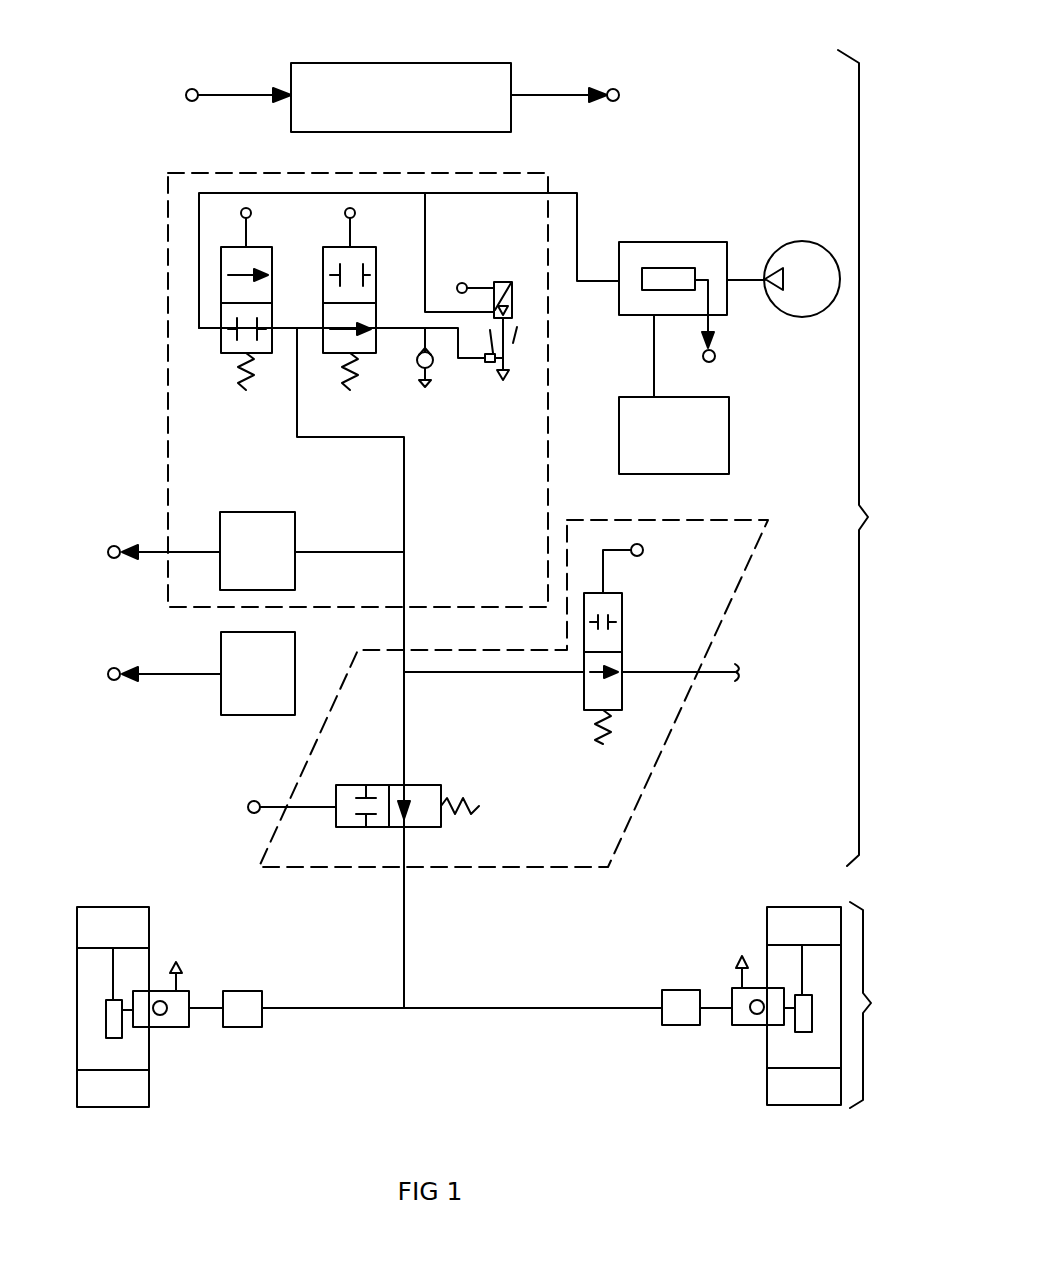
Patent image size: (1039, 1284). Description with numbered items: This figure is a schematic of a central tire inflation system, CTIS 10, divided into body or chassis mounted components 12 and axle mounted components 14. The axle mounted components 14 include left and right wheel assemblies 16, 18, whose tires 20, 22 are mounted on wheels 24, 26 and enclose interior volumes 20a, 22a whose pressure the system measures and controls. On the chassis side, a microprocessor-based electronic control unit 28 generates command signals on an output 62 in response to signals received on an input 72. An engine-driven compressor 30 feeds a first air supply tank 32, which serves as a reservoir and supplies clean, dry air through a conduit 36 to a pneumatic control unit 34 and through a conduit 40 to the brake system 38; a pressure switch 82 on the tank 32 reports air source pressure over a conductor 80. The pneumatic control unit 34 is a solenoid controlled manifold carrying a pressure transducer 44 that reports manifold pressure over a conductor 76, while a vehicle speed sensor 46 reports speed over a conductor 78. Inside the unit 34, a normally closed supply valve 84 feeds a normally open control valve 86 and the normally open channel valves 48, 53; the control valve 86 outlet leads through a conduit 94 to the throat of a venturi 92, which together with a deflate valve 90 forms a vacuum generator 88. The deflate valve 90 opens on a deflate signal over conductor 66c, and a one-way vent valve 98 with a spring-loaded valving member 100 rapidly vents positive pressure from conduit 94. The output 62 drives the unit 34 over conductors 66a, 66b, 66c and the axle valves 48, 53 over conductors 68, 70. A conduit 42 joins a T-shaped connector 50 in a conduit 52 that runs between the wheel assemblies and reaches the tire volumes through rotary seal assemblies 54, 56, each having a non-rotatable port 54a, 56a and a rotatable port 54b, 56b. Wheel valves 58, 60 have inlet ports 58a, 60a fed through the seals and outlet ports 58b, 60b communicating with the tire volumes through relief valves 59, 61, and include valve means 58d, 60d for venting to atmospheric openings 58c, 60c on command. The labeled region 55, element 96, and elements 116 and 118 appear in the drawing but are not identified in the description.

The central tire inflation system 10 is at (676, 140).
The body/chassis mounted components 12 is at (868, 458).
The axle mounted components 14 is at (875, 1005).
The left wheel assembly 16 is at (95, 892).
The right wheel assembly 18 is at (770, 896).
The tire 20 is at (150, 910).
The interior volume 20a is at (125, 920).
The tire 22 is at (767, 923).
The interior volume 22a is at (800, 905).
The wheel 24 is at (150, 958).
The wheel 26 is at (843, 952).
The electronic control unit 28 is at (418, 62).
The compressor 30 is at (802, 241).
The first air supply tank 32 is at (676, 258).
The pneumatic control unit 34 is at (210, 158).
The conduit 36 is at (559, 192).
The brake system 38 is at (729, 454).
The conduit 40 is at (653, 352).
The conduit 42 is at (430, 748).
The pressure transducer 44 is at (257, 511).
The vehicle speed sensor 46 is at (299, 660).
The axle valve 48 is at (360, 784).
The T-shaped connector 50 is at (415, 1003).
The conduit 52 is at (547, 1003).
The air valve 53 is at (623, 613).
The rotary seal assembly 54 is at (250, 996).
The non-rotatable port 54a is at (265, 1009).
The rotatable port 54b is at (217, 1020).
The bypass valve section 55 is at (676, 750).
The rotary seal assembly 56 is at (668, 990).
The non-rotatable port 56a is at (662, 1000).
The rotatable port 56b is at (700, 1018).
The wheel valve 58 is at (167, 1029).
The inlet port 58a is at (192, 1014).
The outlet port 58b is at (128, 1022).
The atmospheric opening 58c is at (183, 980).
The valve means 58d is at (170, 1003).
The relief valve 59 is at (97, 1008).
The wheel valve 60 is at (748, 1027).
The inlet port 60a is at (728, 1014).
The outlet port 60b is at (788, 1016).
The atmospheric opening 60c is at (742, 984).
The valve means 60d is at (750, 1002).
The relief valve 61 is at (824, 1008).
The output 62 is at (543, 92).
The conductor 66a is at (252, 216).
The conductor 66b is at (356, 216).
The conductor 66c is at (480, 285).
The conductor 68 is at (309, 810).
The conductor 70 is at (604, 579).
The input 72 is at (226, 92).
The conductor 76 is at (197, 550).
The conductor 78 is at (178, 672).
The conductor 80 is at (716, 320).
The pressure switch 82 is at (654, 267).
The supply valve 84 is at (220, 345).
The control valve 86 is at (323, 345).
The vacuum generator 88 is at (484, 250).
The deflate valve 90 is at (514, 294).
The venturi 92 is at (514, 344).
The conduit 94 is at (408, 326).
The relief valve 96 is at (507, 359).
The one-way vent valve 98 is at (450, 380).
The valving member 100 is at (417, 369).
The piston head 116 is at (800, 920).
The piston rod 118 is at (798, 996).